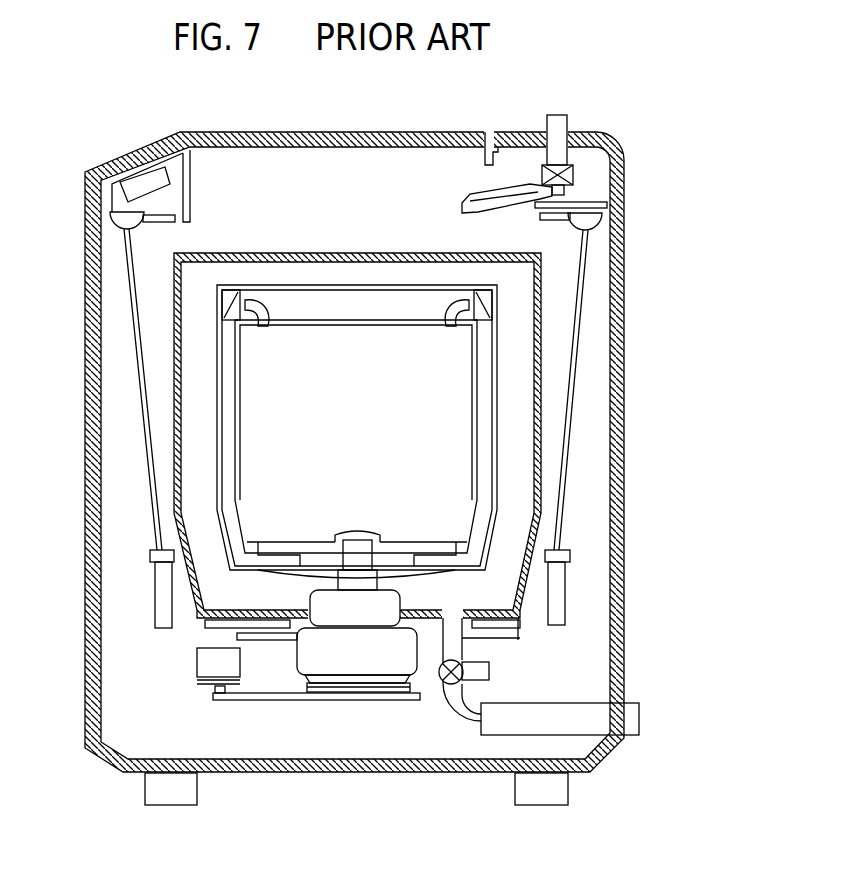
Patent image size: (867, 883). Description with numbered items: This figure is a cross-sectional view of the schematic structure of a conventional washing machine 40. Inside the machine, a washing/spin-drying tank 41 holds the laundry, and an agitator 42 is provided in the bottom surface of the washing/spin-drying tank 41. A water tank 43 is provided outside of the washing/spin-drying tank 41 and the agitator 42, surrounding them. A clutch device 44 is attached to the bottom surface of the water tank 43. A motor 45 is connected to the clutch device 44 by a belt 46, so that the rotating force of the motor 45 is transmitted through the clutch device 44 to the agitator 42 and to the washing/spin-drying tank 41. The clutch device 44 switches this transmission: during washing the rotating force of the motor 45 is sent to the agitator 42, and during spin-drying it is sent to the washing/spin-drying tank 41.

The conventional washing machine 40 is at (575, 103).
The washing/spin-drying tank 41 is at (483, 435).
The agitator 42 is at (395, 555).
The water tank 43 is at (541, 350).
The clutch device 44 is at (357, 650).
The motor 45 is at (222, 663).
The belt 46 is at (262, 703).